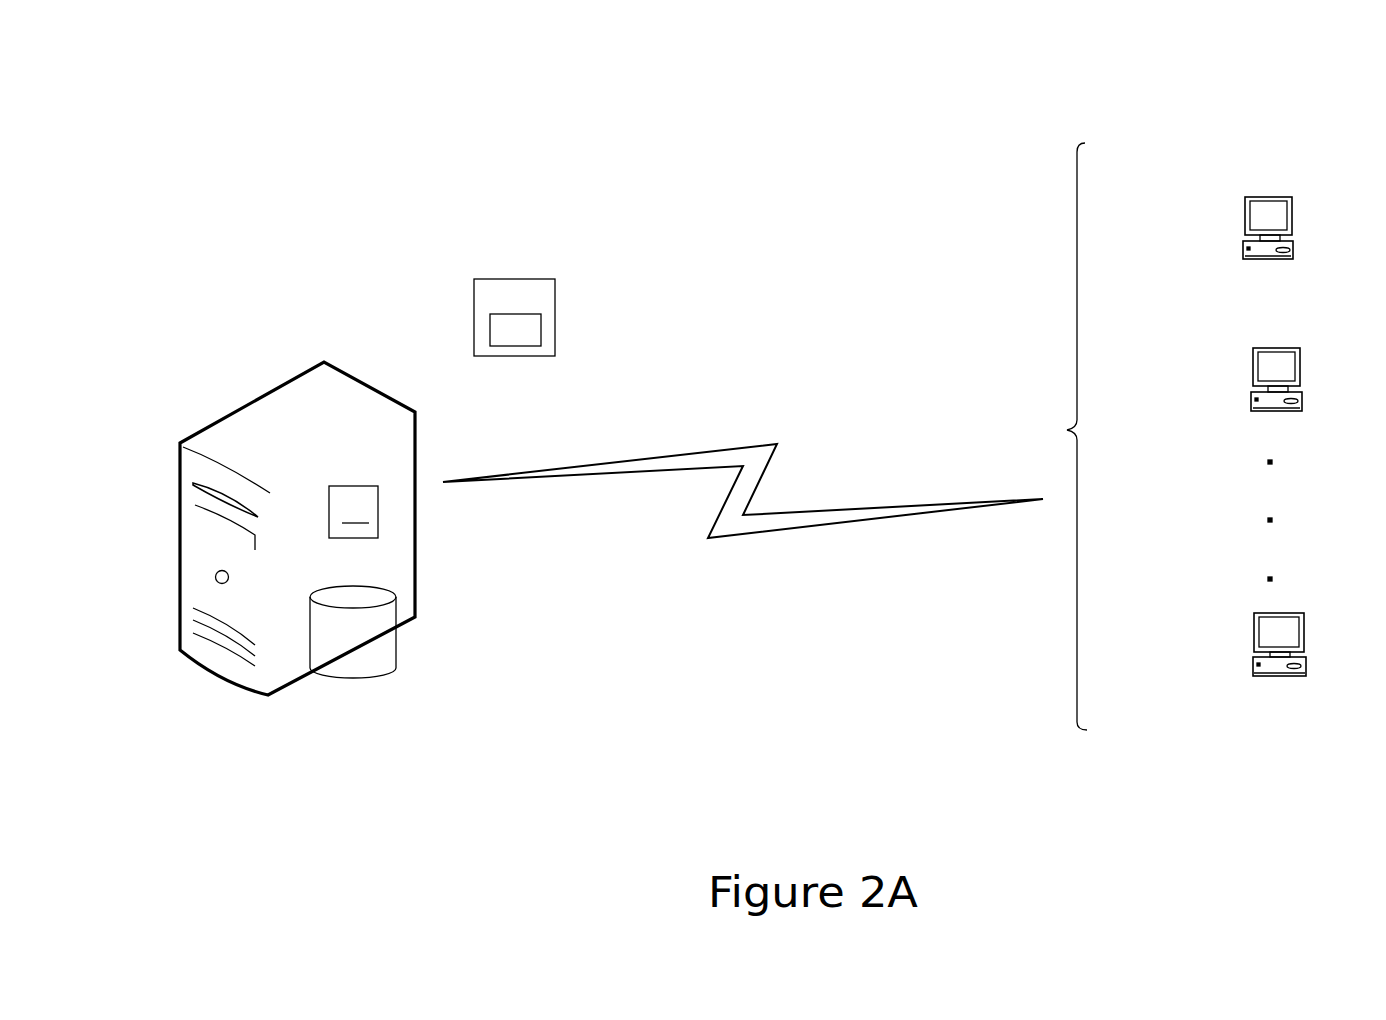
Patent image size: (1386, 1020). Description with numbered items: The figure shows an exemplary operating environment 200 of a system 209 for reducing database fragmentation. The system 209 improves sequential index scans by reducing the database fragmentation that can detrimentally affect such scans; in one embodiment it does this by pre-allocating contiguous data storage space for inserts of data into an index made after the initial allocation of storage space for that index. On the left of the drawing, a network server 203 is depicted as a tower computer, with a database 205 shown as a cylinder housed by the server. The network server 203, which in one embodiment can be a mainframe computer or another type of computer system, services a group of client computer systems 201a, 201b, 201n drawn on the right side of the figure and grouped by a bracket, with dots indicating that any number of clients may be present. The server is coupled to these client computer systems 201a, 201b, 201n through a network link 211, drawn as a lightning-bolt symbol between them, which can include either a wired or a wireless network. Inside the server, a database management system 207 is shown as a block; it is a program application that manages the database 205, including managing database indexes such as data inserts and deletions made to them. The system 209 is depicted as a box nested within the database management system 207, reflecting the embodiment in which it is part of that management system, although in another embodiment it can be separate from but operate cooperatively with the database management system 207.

The operating environment 200 is at (898, 42).
The client computer system 201a is at (1268, 197).
The client computer system 201b is at (1277, 348).
The client computer system 201n is at (1280, 613).
The network server 203 is at (270, 412).
The database 205 is at (396, 665).
The database management system 207 is at (355, 485).
The system for reducing database fragmentation 209 is at (355, 485).
The network link 211 is at (718, 447).